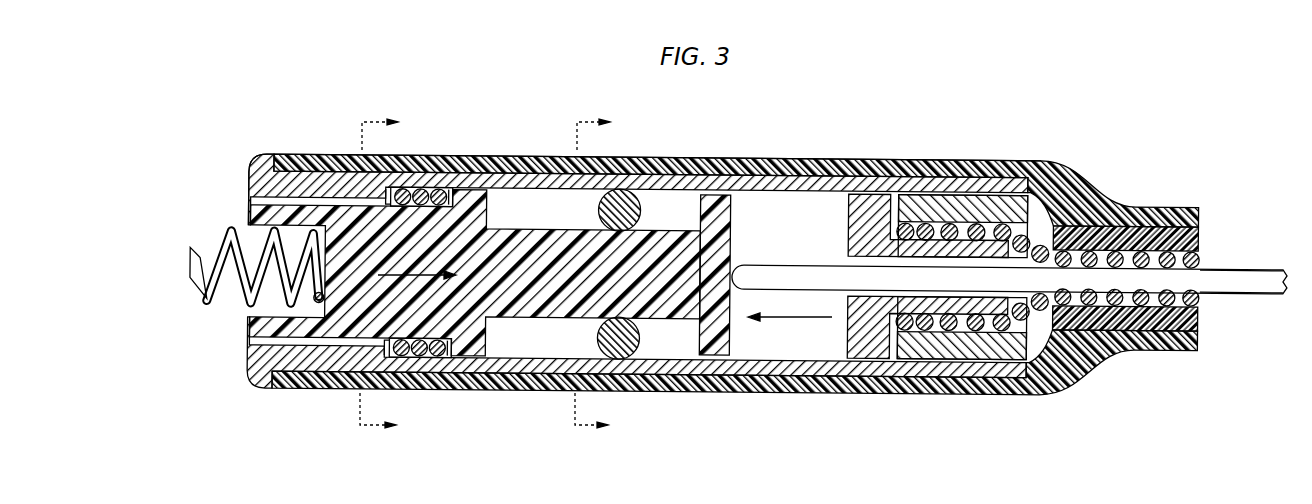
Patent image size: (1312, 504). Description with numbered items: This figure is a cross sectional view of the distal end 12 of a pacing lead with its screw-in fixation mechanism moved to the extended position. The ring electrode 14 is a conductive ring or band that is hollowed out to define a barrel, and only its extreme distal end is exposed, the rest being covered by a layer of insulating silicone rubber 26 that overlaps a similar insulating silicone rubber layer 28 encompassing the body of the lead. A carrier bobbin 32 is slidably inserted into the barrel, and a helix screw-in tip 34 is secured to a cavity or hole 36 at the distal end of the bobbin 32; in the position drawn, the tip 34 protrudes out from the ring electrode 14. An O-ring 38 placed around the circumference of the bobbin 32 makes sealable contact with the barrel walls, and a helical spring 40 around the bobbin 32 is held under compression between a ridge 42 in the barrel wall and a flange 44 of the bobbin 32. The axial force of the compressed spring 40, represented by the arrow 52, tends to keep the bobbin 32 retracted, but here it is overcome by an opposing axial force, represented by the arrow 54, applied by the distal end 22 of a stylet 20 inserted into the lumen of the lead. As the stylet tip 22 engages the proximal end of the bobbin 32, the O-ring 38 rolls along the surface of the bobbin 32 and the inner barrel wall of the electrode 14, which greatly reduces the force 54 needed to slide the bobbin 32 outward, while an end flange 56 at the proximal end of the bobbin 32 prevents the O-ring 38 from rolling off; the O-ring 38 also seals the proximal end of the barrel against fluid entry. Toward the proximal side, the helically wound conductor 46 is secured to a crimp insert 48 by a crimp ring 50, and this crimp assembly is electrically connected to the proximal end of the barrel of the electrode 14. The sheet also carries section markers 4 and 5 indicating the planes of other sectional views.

The distal end 12 is at (513, 84).
The ring electrode 14 is at (250, 186).
The stylet 20 is at (1240, 292).
The distal end of the stylet 22 is at (797, 264).
The silicone rubber insulating layer 26 is at (913, 160).
The insulating silicone rubber layer 28 is at (1200, 242).
The carrier bobbin 32 is at (528, 228).
The helix screw-in tip 34 is at (206, 300).
The cavity or hole 36 is at (240, 230).
The O-ring 38 is at (621, 198).
The helical spring 40 is at (405, 192).
The ridge 42 is at (400, 356).
The flange 44 is at (463, 190).
The helically wound conductor 46 is at (1200, 258).
The crimp insert 48 is at (870, 350).
The crimp ring 50 is at (986, 208).
The spring force arrow 52 is at (413, 276).
The opposing axial force arrow 54 is at (802, 318).
The end flange 56 is at (716, 360).
The section line 4- 4 is at (368, 274).
The section line 5- 5 is at (581, 274).